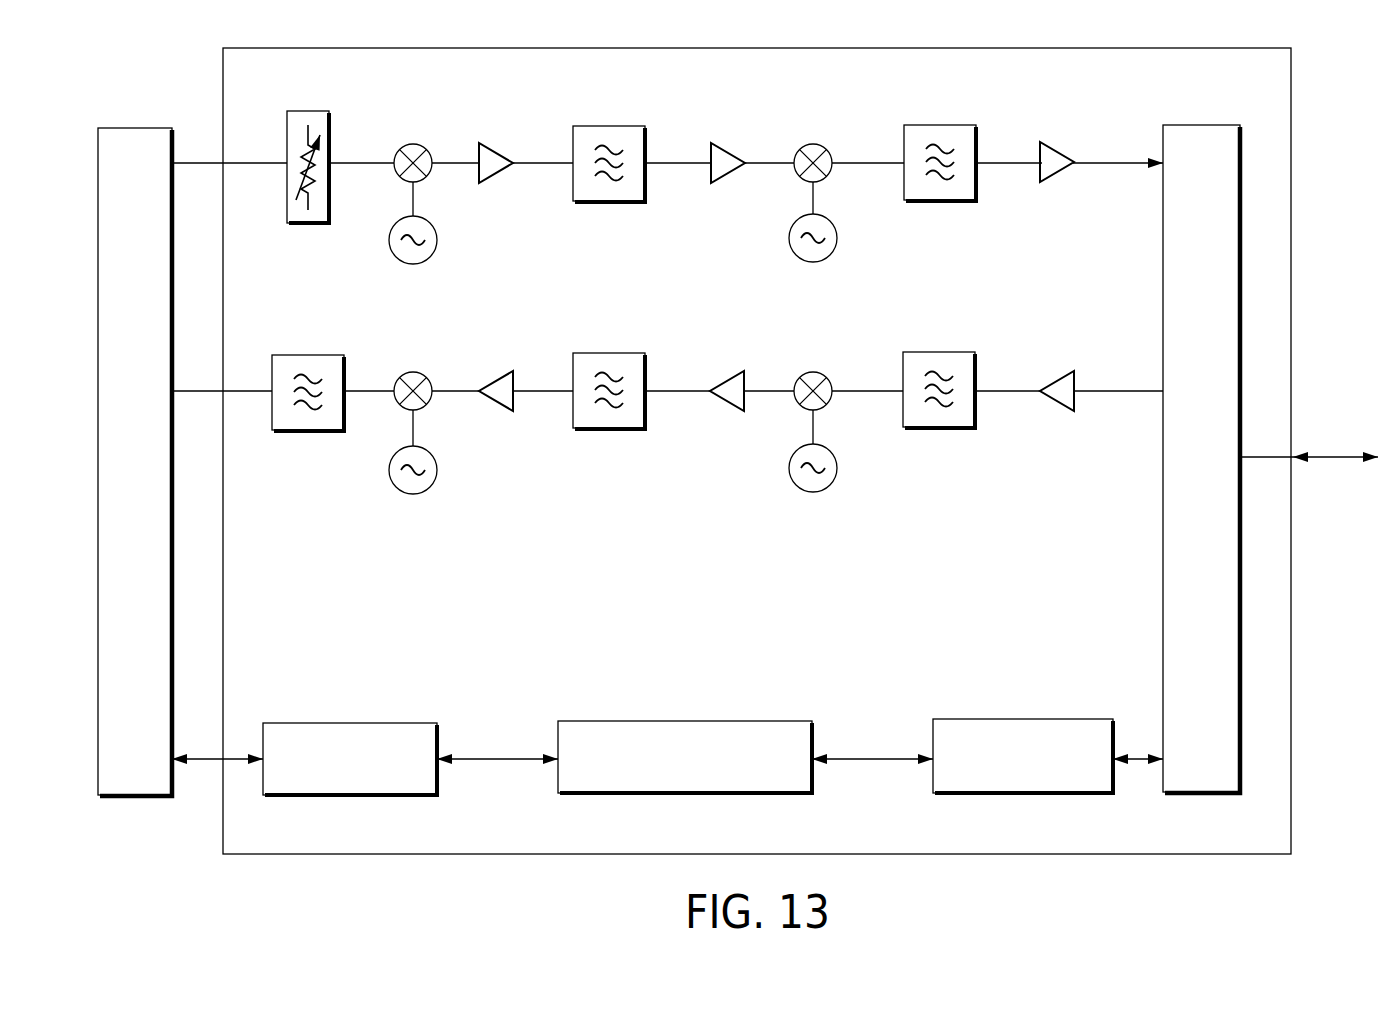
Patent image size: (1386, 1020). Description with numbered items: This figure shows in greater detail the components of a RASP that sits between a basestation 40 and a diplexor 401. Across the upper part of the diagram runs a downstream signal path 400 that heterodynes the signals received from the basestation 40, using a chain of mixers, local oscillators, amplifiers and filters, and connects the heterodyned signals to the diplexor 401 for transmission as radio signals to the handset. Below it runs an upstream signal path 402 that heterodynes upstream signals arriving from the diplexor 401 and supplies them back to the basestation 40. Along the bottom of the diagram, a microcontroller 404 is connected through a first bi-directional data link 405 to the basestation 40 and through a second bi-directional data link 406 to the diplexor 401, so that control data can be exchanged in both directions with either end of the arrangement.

The basestation 40 is at (142, 797).
The downstream signal path 400 is at (1020, 114).
The diplexor 401 is at (1162, 608).
The upstream signal path 402 is at (684, 346).
The microcontroller 404 is at (695, 795).
The bi-directional data link 405 is at (367, 797).
The bi-directional data link 406 is at (1048, 795).